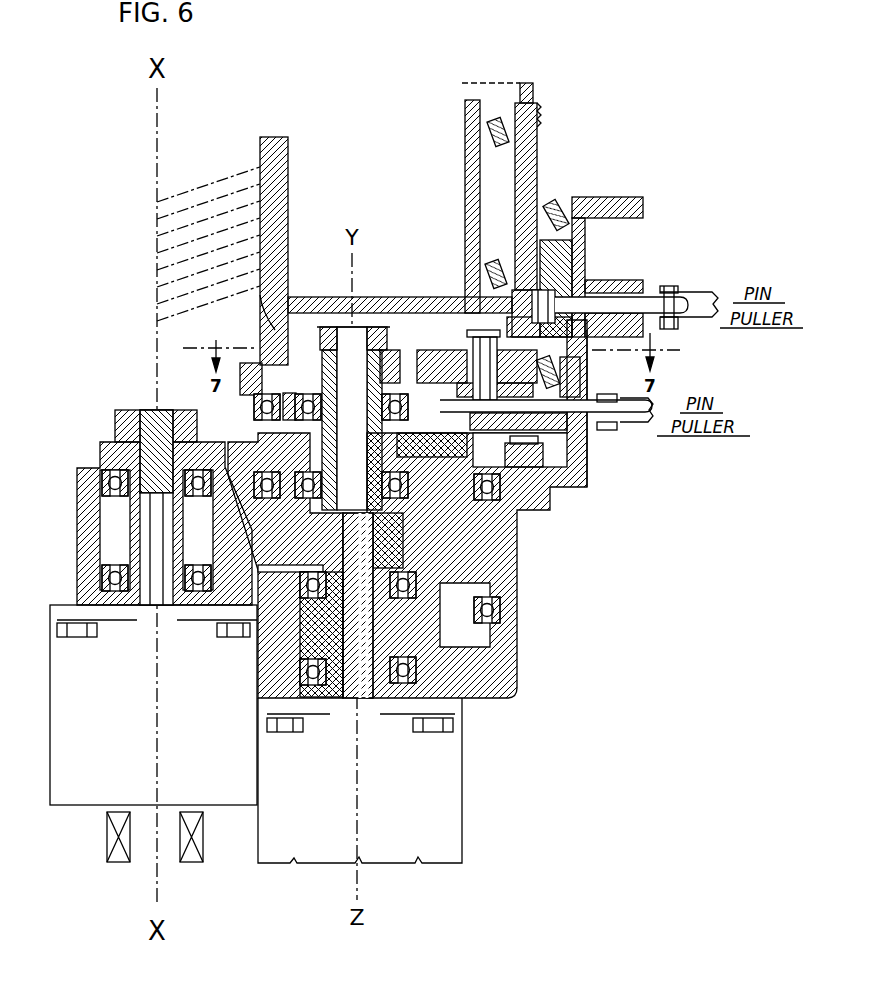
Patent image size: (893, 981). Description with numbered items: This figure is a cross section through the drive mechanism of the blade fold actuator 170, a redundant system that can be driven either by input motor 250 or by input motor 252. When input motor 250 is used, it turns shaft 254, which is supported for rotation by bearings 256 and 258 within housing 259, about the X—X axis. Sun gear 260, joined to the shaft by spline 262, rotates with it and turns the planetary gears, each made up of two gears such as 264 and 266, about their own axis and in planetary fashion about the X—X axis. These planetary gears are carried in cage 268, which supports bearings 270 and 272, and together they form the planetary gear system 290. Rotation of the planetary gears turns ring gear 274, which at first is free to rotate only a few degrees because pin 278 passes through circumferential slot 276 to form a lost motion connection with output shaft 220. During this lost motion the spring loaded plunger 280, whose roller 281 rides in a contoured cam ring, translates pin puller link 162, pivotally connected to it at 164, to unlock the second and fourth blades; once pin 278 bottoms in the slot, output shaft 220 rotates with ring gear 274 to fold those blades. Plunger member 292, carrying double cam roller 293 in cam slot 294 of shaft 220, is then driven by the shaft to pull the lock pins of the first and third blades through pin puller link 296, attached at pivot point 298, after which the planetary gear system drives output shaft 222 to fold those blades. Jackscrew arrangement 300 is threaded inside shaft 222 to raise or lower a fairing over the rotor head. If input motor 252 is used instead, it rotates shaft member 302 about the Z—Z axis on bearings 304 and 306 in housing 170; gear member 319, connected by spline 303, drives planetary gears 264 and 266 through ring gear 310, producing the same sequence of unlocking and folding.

The pin puller link 162 is at (637, 410).
The pivotal connection 164 is at (617, 430).
The blade folding actuator 170 is at (590, 488).
The output shaft 220 is at (537, 132).
The output shaft 222 is at (467, 121).
The input motor 250 is at (90, 773).
The input motor 252 is at (440, 817).
The shaft 254 is at (147, 518).
The bearing 256 is at (103, 485).
The bearing 258 is at (105, 580).
The housing 259 is at (85, 541).
The sun gear 260 is at (280, 447).
The spline 262 is at (120, 437).
The planetary gear 264 is at (398, 333).
The planetary gear 266 is at (557, 502).
The cage 268 is at (410, 445).
The bearing 270 is at (283, 370).
The bearing 272 is at (240, 608).
The ring gear 274 is at (567, 372).
The circumferential slot 276 is at (563, 350).
The pin 278 is at (480, 340).
The spring loaded plunger 280 is at (550, 432).
The roller 281 is at (425, 373).
The planetary gear system 290 is at (330, 322).
The plunger member 292 is at (647, 300).
The double cam roller 293 is at (553, 307).
The cam slot 294 is at (540, 293).
The pin puller link 296 is at (697, 295).
The pivot point 298 is at (667, 290).
The jackscrew arrangement 300 is at (197, 183).
The shaft member 302 is at (350, 697).
The spline 303 is at (375, 565).
The bearing 304 is at (300, 610).
The bearing 306 is at (258, 692).
The ring gear 310 is at (505, 483).
The gear member 319 is at (305, 545).